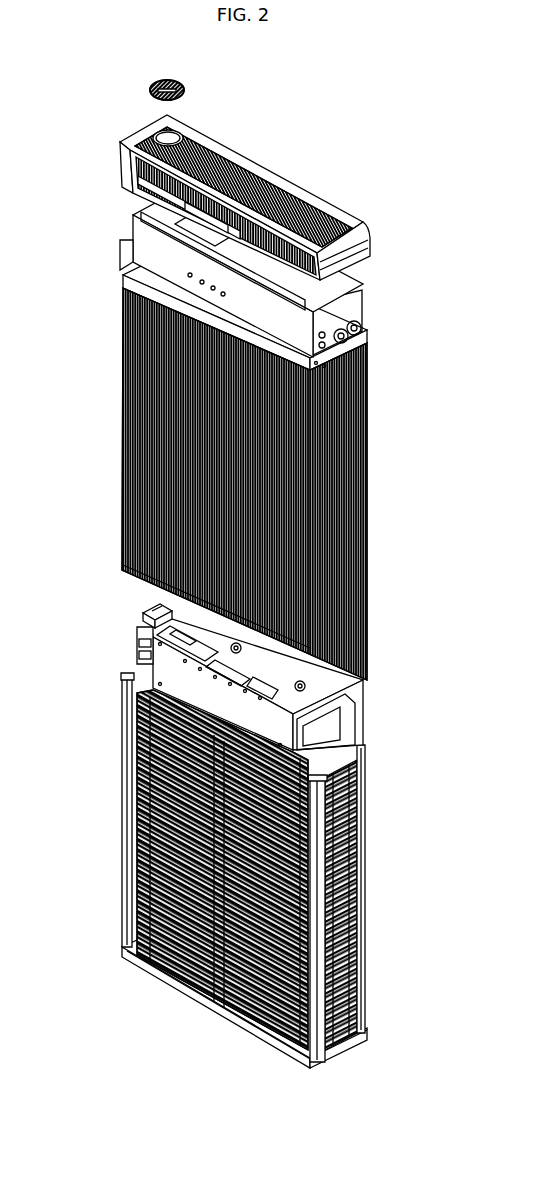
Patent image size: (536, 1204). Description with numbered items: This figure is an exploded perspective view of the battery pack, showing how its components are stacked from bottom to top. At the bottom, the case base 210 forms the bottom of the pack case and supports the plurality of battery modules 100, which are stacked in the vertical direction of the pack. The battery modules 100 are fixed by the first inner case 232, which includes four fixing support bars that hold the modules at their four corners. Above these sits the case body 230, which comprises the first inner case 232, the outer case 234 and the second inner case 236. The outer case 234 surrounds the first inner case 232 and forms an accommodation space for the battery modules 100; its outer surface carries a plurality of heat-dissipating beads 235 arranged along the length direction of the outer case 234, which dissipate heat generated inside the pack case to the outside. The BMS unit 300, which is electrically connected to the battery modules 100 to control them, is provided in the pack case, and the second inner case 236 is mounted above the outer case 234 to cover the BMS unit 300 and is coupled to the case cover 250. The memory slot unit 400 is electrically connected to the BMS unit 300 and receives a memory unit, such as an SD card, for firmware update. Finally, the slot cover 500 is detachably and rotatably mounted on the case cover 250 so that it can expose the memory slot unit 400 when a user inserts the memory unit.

The battery module 100 is at (150, 861).
The case base 210 is at (251, 870).
The case body 230 is at (239, 434).
The first inner case 232 is at (129, 757).
The outer case 234 is at (111, 433).
The heat-dissipating bead 235 is at (204, 463).
The second inner case 236 is at (125, 222).
The case cover 250 is at (379, 224).
The BMS unit 300 is at (210, 669).
The memory slot unit 400 is at (137, 614).
The slot cover 500 is at (149, 85).